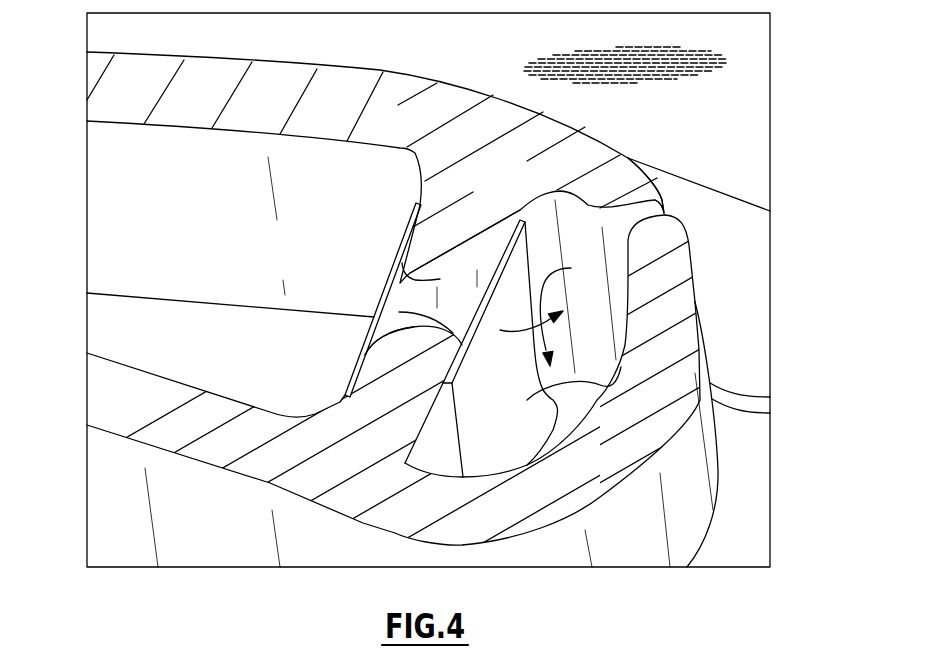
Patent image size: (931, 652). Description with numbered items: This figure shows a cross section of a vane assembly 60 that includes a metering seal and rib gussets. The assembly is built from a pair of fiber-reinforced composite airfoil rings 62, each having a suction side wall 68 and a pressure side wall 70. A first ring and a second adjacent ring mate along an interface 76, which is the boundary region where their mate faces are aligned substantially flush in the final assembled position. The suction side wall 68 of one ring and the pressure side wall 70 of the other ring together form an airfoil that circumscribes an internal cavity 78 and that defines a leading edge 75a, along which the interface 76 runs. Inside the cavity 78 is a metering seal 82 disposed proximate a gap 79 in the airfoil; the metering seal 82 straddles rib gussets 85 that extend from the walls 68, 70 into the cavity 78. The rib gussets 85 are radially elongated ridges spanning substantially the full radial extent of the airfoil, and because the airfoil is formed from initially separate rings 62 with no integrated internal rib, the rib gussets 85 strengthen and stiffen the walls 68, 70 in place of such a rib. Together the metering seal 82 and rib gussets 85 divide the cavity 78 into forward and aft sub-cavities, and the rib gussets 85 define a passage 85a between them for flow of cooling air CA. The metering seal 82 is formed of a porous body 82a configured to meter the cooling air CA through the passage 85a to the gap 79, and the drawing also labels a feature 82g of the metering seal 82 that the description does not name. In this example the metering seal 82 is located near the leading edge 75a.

The vane assembly 60 is at (747, 80).
The fiber-reinforced composite airfoil ring 62 is at (762, 230).
The suction side wall 68 is at (297, 63).
The pressure side wall 70 is at (154, 427).
The leading edge 75a is at (713, 340).
The interface 76 is at (735, 390).
The internal cavity 78 is at (237, 363).
The gap 79 is at (667, 205).
The metering seal 82 is at (365, 325).
The porous body 82a is at (547, 417).
The gap 82g is at (472, 273).
The rib gusset 85 is at (433, 243).
The passage 85a is at (438, 303).
The cooling air CA is at (573, 309).